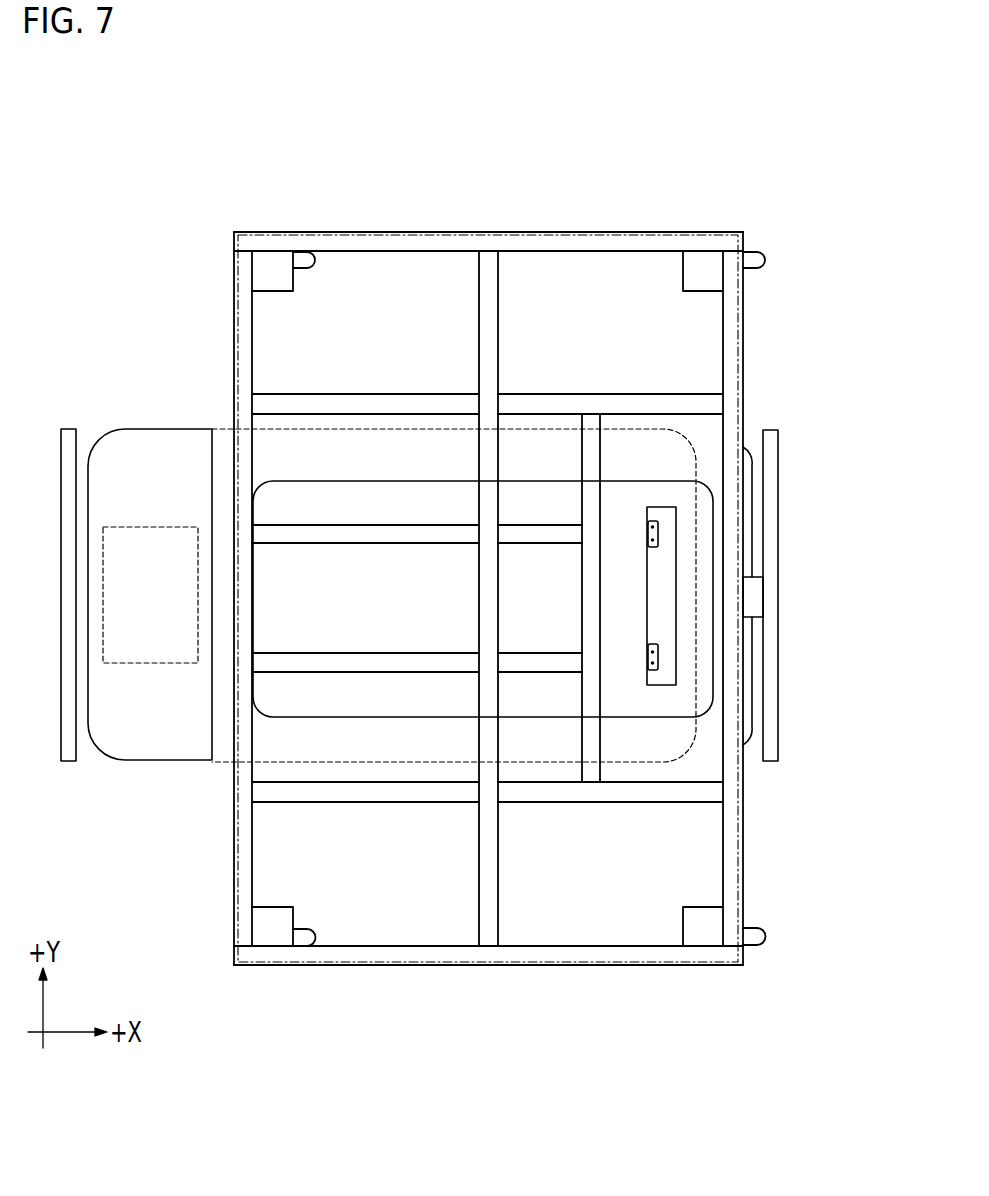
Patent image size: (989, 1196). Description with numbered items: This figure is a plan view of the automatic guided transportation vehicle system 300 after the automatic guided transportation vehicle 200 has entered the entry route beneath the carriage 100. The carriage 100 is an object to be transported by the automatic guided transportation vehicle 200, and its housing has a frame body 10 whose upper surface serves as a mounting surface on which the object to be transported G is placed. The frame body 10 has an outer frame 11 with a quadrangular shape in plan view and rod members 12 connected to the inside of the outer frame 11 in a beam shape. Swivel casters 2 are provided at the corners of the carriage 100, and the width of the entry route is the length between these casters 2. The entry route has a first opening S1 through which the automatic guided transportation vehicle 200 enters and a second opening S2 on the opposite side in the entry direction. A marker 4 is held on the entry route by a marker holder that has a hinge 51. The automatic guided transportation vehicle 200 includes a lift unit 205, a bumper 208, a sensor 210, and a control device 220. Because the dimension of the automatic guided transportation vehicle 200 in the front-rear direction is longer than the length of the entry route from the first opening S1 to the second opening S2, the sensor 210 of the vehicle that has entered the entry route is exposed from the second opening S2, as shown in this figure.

The automatic guided transportation vehicle system 300 is at (212, 178).
The carriage 100 is at (571, 157).
The object to be transported G is at (622, 235).
The frame body 10 is at (488, 590).
The outer frame 11 is at (555, 955).
The rod member 12 is at (376, 407).
The swivel caster 2 is at (265, 272).
The marker 4 is at (662, 569).
The hinge 51 is at (660, 532).
The first opening S1 is at (204, 394).
The second opening S2 is at (765, 410).
The automatic guided transportation vehicle 200 is at (97, 370).
The lift unit 205 is at (322, 715).
The bumper 208 is at (52, 727).
The sensor 210 is at (755, 593).
The control device 220 is at (152, 663).